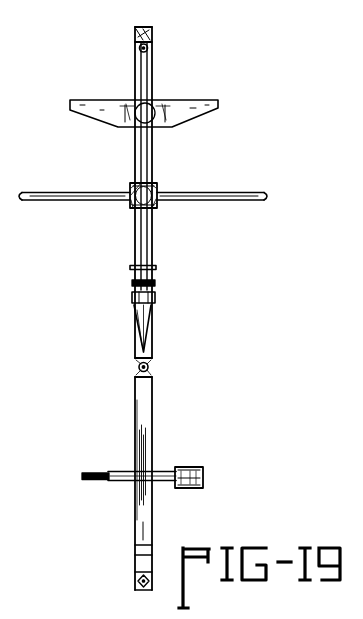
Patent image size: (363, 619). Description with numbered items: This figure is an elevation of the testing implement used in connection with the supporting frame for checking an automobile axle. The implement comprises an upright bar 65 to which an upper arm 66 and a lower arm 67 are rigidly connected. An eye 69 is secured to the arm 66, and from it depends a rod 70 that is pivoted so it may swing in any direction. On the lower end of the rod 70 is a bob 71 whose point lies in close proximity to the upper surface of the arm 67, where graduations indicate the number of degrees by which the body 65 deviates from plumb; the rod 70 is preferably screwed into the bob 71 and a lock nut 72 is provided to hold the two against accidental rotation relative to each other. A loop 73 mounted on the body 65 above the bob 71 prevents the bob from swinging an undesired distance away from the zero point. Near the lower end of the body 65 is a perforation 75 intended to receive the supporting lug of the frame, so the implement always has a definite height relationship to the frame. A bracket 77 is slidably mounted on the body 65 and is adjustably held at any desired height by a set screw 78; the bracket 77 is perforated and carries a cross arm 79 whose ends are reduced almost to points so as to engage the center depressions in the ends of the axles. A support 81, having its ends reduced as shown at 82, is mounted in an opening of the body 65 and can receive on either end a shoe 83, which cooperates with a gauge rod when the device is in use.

The bar 65 is at (140, 400).
The arm 66 is at (154, 38).
The arm 67 is at (153, 367).
The eye 69 is at (148, 48).
The rod 70 is at (148, 160).
The bob 71 is at (143, 320).
The packing ring 72 is at (156, 283).
The loop 73 is at (156, 268).
The perforation 75 is at (135, 550).
The bracket 77 is at (156, 188).
The set screw 78 is at (157, 205).
The cross arm 79 is at (76, 200).
The support 81 is at (122, 482).
The reduced ends 82 is at (92, 482).
The shoe 83 is at (190, 470).